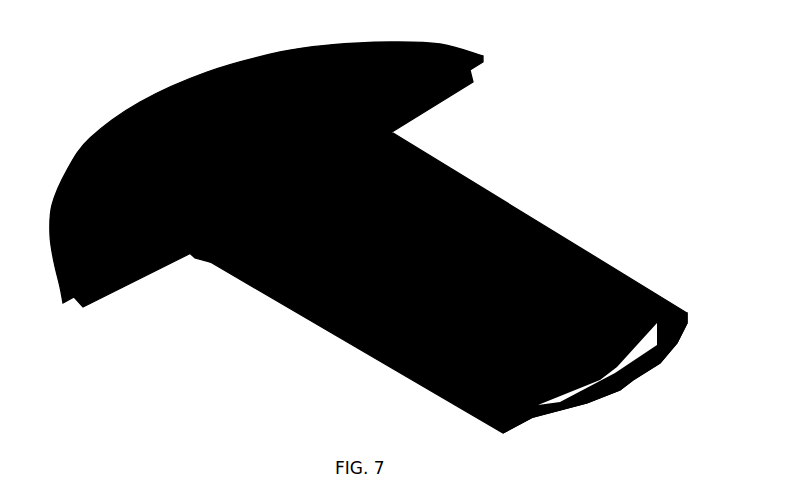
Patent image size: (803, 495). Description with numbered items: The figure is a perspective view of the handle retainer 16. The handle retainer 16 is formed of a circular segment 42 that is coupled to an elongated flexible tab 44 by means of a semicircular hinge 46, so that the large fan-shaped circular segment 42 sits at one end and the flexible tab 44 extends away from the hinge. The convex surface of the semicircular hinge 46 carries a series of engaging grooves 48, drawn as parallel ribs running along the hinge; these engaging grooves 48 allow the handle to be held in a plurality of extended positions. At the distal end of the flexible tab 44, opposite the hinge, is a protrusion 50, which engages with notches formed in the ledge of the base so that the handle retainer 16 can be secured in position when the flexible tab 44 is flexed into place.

The handle retainer 16 is at (386, 237).
The circular segment 42 is at (146, 122).
The flexible tab 44 is at (543, 231).
The semicircular hinge 46 is at (393, 138).
The engaging grooves 48 is at (198, 251).
The protrusion 50 is at (628, 394).